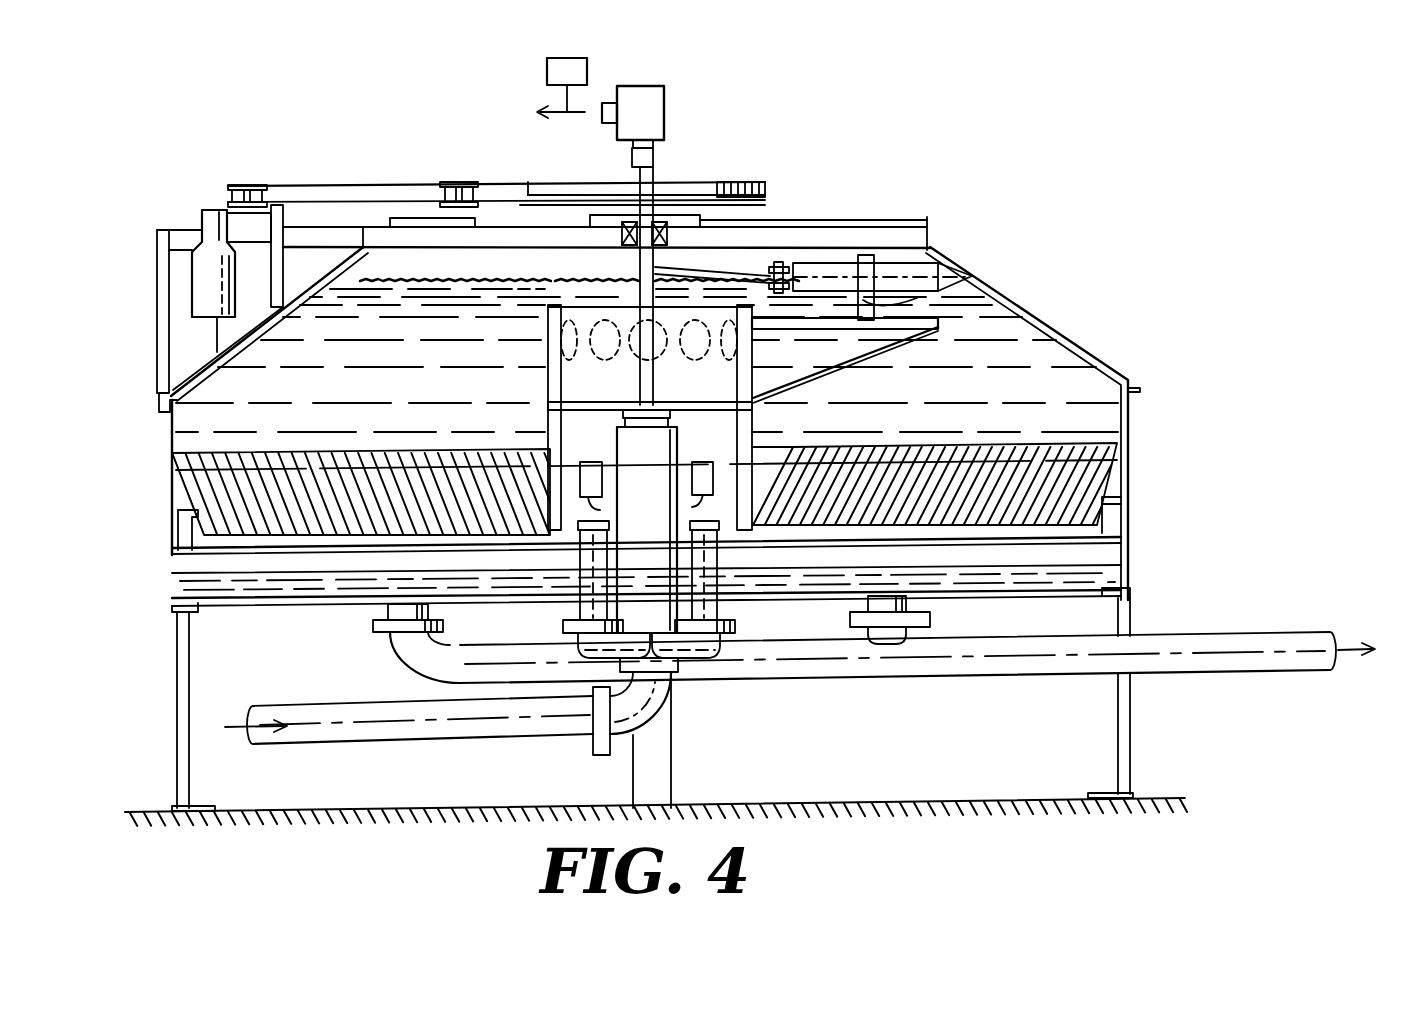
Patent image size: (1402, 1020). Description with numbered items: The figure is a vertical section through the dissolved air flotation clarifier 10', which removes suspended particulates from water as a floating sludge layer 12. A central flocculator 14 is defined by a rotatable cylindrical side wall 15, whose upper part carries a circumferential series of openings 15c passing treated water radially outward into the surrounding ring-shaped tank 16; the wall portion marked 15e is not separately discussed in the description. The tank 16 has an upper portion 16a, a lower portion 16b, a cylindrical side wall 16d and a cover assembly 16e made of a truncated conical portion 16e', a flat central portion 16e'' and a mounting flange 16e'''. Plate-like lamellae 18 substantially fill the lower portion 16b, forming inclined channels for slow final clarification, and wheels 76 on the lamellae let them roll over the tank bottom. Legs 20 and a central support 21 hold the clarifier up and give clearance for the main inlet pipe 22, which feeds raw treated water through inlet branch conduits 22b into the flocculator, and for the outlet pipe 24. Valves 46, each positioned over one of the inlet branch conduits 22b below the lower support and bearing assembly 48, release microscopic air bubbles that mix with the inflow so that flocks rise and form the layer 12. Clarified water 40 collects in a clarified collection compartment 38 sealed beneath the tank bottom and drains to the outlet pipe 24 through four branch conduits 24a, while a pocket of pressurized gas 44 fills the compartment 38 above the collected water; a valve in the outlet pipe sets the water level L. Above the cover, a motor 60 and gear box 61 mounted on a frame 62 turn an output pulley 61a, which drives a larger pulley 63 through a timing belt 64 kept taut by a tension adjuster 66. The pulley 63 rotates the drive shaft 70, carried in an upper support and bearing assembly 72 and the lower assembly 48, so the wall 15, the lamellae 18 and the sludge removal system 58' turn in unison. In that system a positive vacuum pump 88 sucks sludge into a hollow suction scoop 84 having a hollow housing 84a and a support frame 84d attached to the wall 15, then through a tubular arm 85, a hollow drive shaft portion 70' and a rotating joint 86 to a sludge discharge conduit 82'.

The dissolved air flotation clarifier 10' is at (599, 182).
The floating sludge layer 12 is at (400, 278).
The central flocculator 14 is at (586, 318).
The rotatable cylindrical side wall 15 is at (755, 418).
The openings 15c is at (548, 328).
The housing wall 15e is at (548, 433).
The tank 16 is at (438, 266).
The upper tank portion 16a is at (657, 340).
The lower tank portion 16b is at (318, 444).
The cylindrical side wall 16d is at (172, 470).
The cover assembly 16e is at (1029, 423).
The truncated conical portion 16e' is at (1033, 426).
The flat central portion 16e'' is at (813, 213).
The mounting flange 16e''' is at (937, 213).
The lamellae 18 is at (197, 483).
The legs 20 is at (190, 686).
The central support 21 is at (672, 758).
The main inlet pipe 22 is at (358, 705).
The inlet branch conduits 22b is at (572, 610).
The outlet pipe 24 is at (918, 680).
The branch conduits 24a is at (388, 616).
The clarified collection compartment 38 is at (1138, 579).
The clarified water 40 is at (1100, 598).
The pressurized gas layer 44 is at (1100, 555).
The valves 46 is at (588, 462).
The lower support and bearing assembly 48 is at (572, 399).
The sludge removal system 58' is at (615, 208).
The motor 60 is at (192, 276).
The gear box 61 is at (245, 232).
The output pulley 61a is at (253, 185).
The frame 62 is at (143, 240).
The larger diameter pulley 63 is at (722, 184).
The timing belt 64 is at (340, 186).
The tension adjuster 66 is at (456, 182).
The drive shaft 70 is at (678, 268).
The hollow drive shaft portion 70' is at (668, 160).
The upper support and bearing assembly 72 is at (646, 170).
The wheels 76 is at (178, 540).
The sludge discharge conduit 82' is at (592, 88).
The hollow suction scoop 84 is at (930, 258).
The hollow housing 84a is at (878, 305).
The support frame 84d is at (905, 330).
The tubular arm 85 is at (700, 268).
The rotating joint 86 is at (665, 100).
The positive vacuum pump 88 is at (588, 68).
The water level L is at (516, 278).